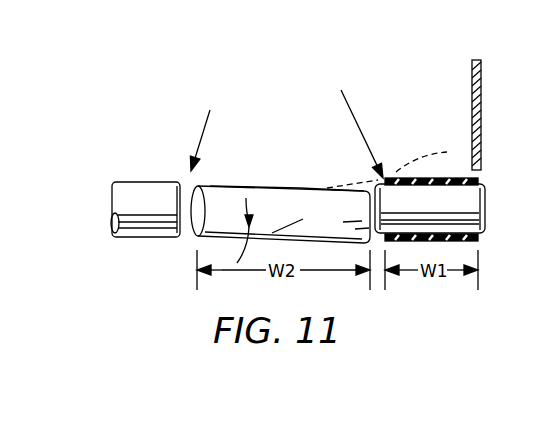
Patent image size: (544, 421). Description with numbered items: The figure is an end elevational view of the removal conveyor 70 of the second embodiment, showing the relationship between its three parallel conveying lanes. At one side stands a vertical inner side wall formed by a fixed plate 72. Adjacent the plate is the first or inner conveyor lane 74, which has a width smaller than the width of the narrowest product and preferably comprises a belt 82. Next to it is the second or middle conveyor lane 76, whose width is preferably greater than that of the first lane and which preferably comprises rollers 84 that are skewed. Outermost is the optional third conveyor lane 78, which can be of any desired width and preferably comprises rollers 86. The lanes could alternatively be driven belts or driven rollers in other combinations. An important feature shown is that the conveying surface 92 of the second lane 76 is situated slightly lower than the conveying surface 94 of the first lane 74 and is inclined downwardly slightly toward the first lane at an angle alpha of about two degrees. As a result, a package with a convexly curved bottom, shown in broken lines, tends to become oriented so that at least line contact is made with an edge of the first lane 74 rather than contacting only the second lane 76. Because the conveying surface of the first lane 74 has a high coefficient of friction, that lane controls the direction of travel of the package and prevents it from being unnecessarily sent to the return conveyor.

The removal conveyor 70 is at (243, 100).
The fixed plate 72 is at (483, 77).
The first conveyor lane 74 is at (408, 137).
The second conveyor lane 76 is at (282, 165).
The third conveyor lane 78 is at (139, 167).
The belt 82 is at (442, 164).
The rollers 84 is at (322, 200).
The rollers 86 is at (143, 237).
The conveying surface of the second lane 92 is at (225, 186).
The conveying surface of the first lane 94 is at (448, 177).